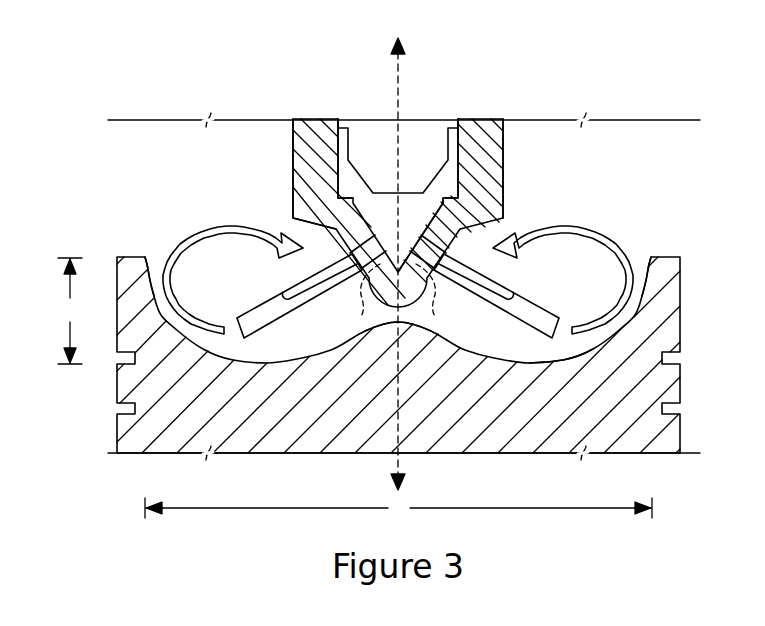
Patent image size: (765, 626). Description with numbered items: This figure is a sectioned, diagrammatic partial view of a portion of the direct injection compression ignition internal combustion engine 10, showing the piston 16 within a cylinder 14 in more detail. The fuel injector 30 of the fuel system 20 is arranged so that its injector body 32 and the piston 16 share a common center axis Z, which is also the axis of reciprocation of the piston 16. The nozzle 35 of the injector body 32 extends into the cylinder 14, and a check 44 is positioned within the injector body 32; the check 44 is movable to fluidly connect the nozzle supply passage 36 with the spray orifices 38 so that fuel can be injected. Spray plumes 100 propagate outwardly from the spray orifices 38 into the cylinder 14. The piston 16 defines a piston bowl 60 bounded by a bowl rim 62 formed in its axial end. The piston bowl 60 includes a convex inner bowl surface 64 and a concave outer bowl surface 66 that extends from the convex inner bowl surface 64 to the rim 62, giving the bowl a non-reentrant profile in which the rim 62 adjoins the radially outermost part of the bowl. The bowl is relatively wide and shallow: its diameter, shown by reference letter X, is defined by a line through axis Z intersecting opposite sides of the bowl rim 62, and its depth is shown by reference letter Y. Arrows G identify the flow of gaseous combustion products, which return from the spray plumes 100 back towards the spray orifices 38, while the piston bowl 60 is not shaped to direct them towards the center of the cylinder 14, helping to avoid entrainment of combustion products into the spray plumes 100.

The internal combustion engine 10 is at (66, 214).
The cylinder 14 is at (594, 151).
The piston 16 is at (664, 326).
The fuel system 20 is at (298, 117).
The fuel injector 30 is at (505, 118).
The injector body 32 is at (482, 130).
The nozzle 35 is at (300, 192).
The nozzle supply passage 36 is at (340, 132).
The spray orifices 38 is at (347, 251).
The check 44 is at (420, 134).
The piston bowl 60 is at (148, 256).
The bowl rim 62 is at (649, 256).
The convex inner bowl surface 64 is at (392, 328).
The concave outer bowl surface 66 is at (580, 360).
The spray plumes 100 is at (262, 334).
The arrows G is at (204, 226).
The bowl diameter X is at (398, 508).
The bowl depth Y is at (70, 311).
The center axis Z is at (408, 392).